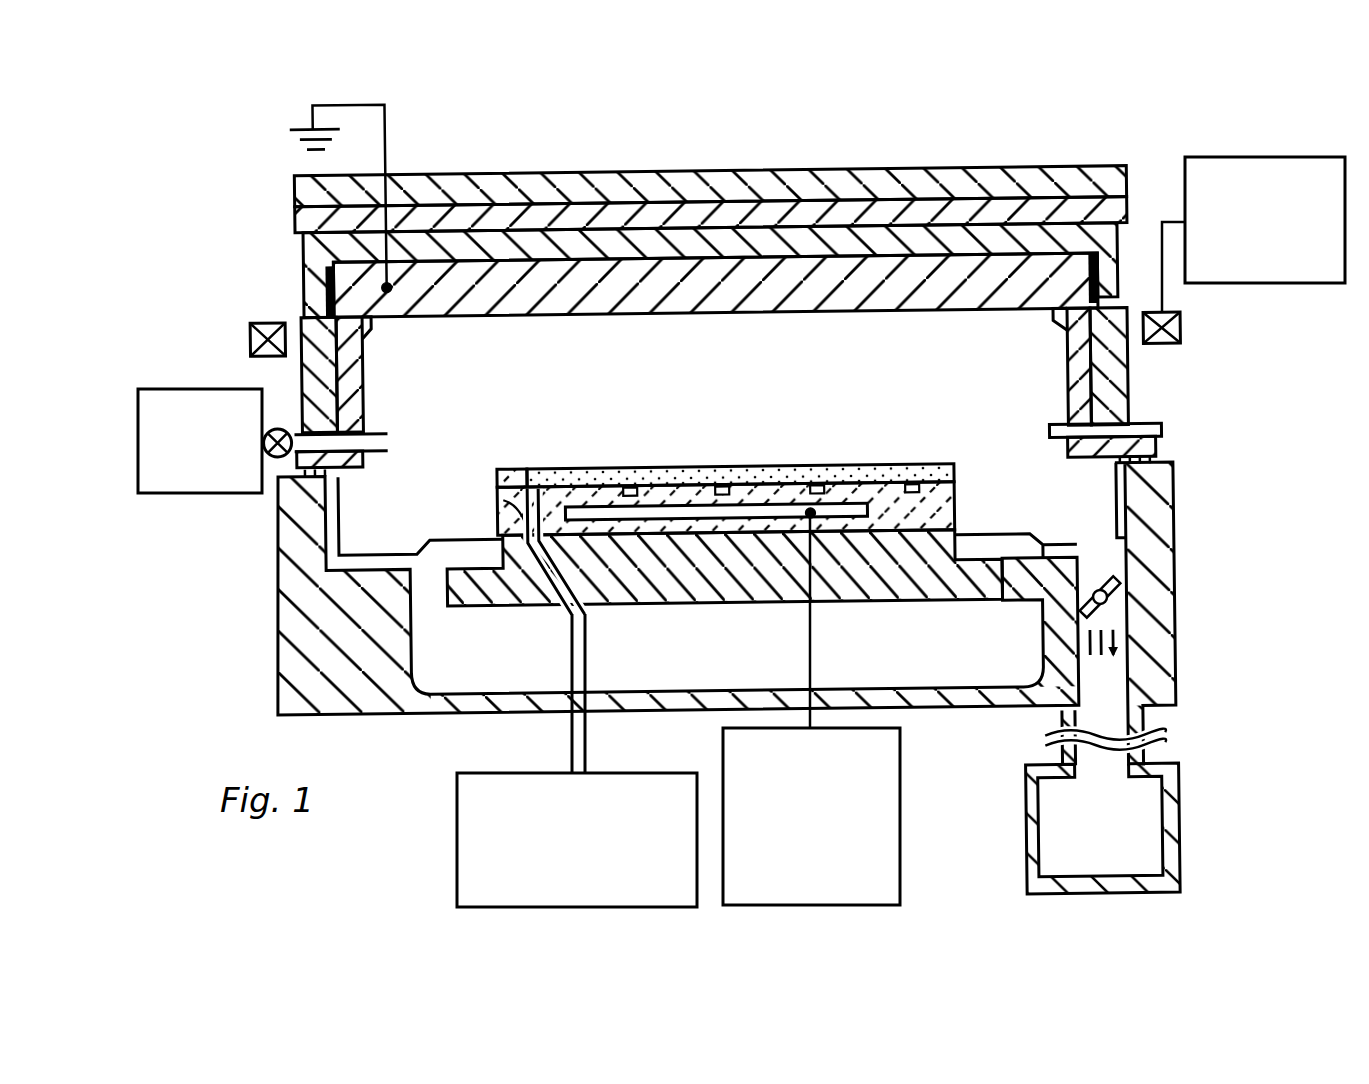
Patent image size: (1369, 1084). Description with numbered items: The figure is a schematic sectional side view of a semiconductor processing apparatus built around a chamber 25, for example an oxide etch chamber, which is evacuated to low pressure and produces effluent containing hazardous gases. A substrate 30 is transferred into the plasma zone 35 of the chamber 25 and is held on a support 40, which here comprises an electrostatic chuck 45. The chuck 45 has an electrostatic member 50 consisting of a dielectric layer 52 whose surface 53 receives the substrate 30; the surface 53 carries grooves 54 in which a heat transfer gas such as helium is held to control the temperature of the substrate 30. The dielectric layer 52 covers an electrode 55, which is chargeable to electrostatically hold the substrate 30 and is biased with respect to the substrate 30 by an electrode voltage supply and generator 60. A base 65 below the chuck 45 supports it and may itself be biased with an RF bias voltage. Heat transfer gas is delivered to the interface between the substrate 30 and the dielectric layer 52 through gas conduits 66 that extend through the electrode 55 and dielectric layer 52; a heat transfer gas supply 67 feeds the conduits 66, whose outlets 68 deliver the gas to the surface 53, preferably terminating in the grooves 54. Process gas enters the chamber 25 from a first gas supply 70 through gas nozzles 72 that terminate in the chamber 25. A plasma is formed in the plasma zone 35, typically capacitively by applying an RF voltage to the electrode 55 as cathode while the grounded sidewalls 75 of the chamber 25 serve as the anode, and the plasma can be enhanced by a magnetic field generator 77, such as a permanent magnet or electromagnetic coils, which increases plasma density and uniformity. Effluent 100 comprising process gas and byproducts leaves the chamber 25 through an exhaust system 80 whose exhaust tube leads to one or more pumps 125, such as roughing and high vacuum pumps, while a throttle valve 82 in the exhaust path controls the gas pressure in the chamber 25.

The chamber 25 is at (943, 138).
The substrate 30 is at (698, 470).
The plasma zone 35 is at (692, 369).
The support 40 is at (729, 574).
The electrostatic chuck 45 is at (490, 500).
The electrostatic member 50 is at (596, 496).
The dielectric layer 52 is at (648, 495).
The surface 53 is at (885, 478).
The grooves 54 is at (818, 487).
The electrode 55 is at (870, 512).
The electrode voltage supply and generator 60 is at (900, 818).
The base 65 is at (725, 567).
The gas conduits 66 is at (500, 526).
The heat transfer gas supply 67 is at (457, 848).
The outlets 68 is at (530, 486).
The first gas supply 70 is at (190, 389).
The gas nozzles 72 is at (378, 432).
The sidewalls 75 is at (1067, 392).
The magnetic field generator 77 is at (1233, 157).
The exhaust system 80 is at (1188, 590).
The throttle valve 82 is at (1096, 588).
The effluent 100 is at (1118, 643).
The pumps 125 is at (1180, 822).